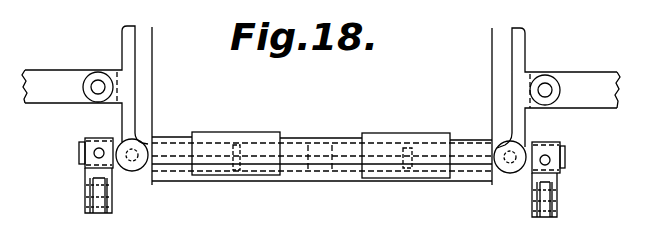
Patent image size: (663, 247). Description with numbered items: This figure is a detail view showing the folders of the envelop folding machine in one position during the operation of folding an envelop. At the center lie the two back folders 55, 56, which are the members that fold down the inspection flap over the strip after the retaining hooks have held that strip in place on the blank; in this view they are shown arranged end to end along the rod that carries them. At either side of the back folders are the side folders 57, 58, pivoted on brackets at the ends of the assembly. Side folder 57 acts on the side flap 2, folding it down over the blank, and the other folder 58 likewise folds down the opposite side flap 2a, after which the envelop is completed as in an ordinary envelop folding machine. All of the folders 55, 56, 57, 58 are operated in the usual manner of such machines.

The side flap 2 is at (153, 41).
The side flap 2a is at (492, 30).
The back folder 55 is at (242, 137).
The back folder 56 is at (395, 133).
The side folder 57 is at (122, 34).
The folder 58 is at (522, 47).